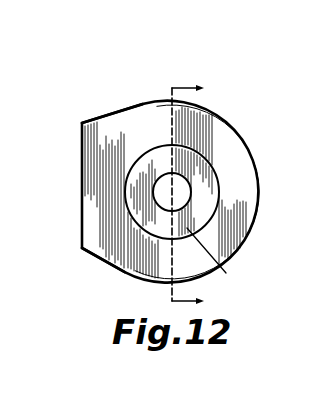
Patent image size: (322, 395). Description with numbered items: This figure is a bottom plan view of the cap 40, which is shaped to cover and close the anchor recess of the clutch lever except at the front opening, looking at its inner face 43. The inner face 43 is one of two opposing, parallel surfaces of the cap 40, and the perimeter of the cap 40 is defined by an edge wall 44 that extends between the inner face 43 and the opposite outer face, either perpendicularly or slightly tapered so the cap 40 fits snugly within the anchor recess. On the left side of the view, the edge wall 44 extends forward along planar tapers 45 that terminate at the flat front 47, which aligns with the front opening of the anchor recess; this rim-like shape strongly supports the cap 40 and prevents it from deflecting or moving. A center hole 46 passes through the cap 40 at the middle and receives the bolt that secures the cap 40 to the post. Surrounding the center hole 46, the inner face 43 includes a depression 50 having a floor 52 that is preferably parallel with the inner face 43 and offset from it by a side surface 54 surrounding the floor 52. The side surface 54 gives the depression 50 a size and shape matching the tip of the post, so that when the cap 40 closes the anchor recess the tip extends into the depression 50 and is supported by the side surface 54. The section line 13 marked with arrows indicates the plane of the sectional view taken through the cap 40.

The section line 13- 13 is at (174, 194).
The cap 40 is at (233, 92).
The inner face 43 is at (228, 137).
The edge wall 44 is at (246, 240).
The planar tapers 45 is at (117, 112).
The center hole 46 is at (163, 190).
The front 47 is at (82, 199).
The depression 50 is at (220, 171).
The floor 52 is at (226, 273).
The side surface 54 is at (212, 217).